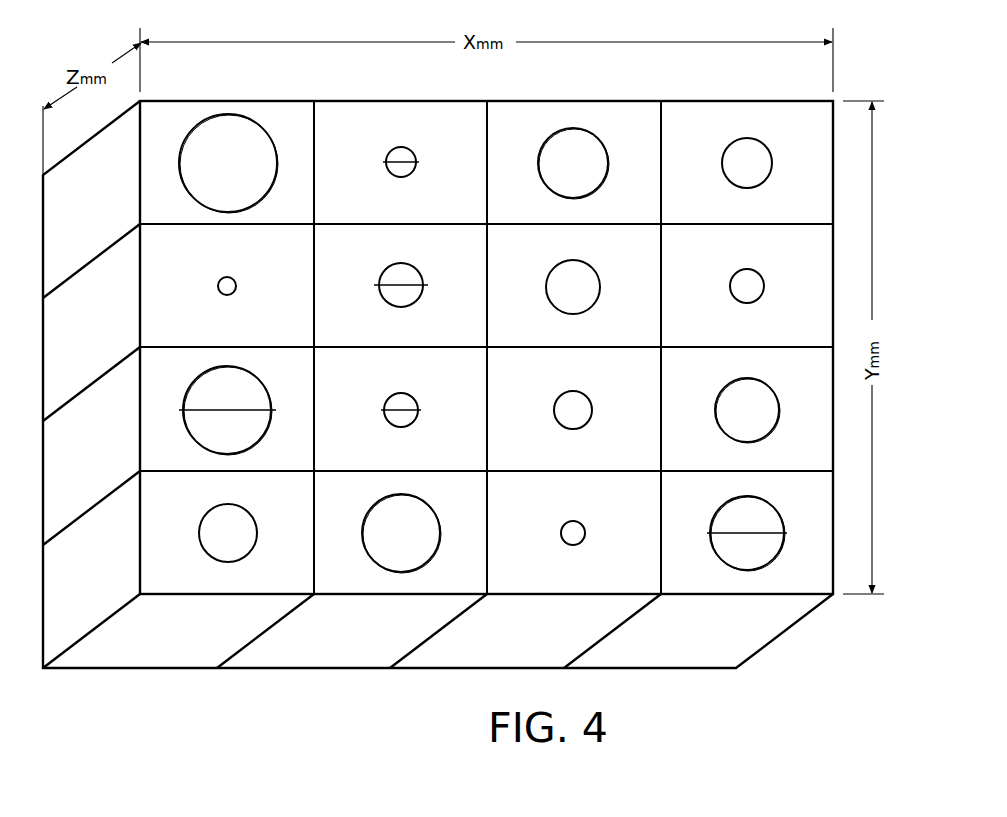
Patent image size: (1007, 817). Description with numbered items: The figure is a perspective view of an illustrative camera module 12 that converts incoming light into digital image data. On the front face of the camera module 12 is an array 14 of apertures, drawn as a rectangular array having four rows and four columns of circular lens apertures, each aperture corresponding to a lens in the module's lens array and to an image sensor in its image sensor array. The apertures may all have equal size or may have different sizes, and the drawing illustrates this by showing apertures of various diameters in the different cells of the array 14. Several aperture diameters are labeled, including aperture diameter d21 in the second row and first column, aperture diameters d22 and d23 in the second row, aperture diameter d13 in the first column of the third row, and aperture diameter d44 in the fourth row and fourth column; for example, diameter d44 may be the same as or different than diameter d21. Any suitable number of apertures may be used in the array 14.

The camera module 12 is at (97, 333).
The array of apertures 14 is at (608, 97).
The aperture diameter d13 is at (229, 408).
The aperture diameter d21 is at (401, 161).
The aperture diameter d22 is at (401, 284).
The aperture diameter d23 is at (401, 409).
The aperture diameter d44 is at (747, 531).